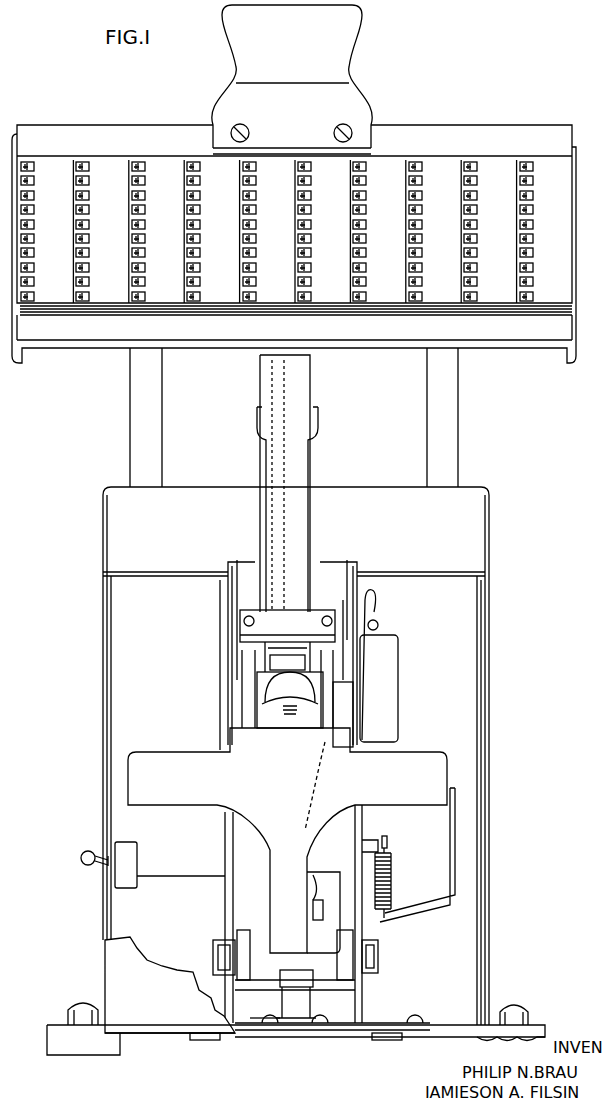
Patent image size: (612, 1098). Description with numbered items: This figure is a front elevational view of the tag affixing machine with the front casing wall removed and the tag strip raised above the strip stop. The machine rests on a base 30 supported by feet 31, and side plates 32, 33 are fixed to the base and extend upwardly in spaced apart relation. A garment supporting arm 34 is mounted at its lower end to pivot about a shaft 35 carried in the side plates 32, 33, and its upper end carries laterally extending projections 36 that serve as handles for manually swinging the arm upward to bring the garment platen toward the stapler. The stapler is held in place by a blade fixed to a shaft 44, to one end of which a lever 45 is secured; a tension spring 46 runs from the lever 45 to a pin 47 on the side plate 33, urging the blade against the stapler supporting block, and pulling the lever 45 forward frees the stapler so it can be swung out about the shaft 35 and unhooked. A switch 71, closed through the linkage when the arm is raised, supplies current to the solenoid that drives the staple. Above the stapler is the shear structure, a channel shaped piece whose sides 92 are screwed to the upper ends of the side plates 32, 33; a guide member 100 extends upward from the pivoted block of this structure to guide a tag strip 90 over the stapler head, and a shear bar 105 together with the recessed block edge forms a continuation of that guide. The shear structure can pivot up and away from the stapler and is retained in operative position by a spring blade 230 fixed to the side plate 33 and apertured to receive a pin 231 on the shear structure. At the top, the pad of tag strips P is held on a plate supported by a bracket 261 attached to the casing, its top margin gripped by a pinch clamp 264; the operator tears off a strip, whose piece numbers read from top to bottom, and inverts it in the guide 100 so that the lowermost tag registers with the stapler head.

The pinch clamp 264 is at (292, 79).
The pad of tag strips P is at (38, 312).
The bracket 261 is at (162, 421).
The tag strip 90 is at (296, 478).
The guide member 100 is at (257, 510).
The sides of channel shaped piece 92 is at (230, 572).
The shear bar 105 is at (287, 626).
The spring blade 230 is at (375, 598).
The pin 231 is at (379, 625).
The switch 71 is at (392, 678).
The laterally extending projections 36 is at (170, 790).
The garment supporting arm 34 is at (300, 837).
The side plate 33 is at (365, 820).
The side plate 32 is at (233, 892).
The pin 47 is at (390, 840).
The tension spring 46 is at (394, 872).
The lever 45 is at (385, 968).
The shaft 35 is at (213, 953).
The shaft 44 is at (253, 1005).
The feet 31 is at (88, 1045).
The base 30 is at (440, 1034).